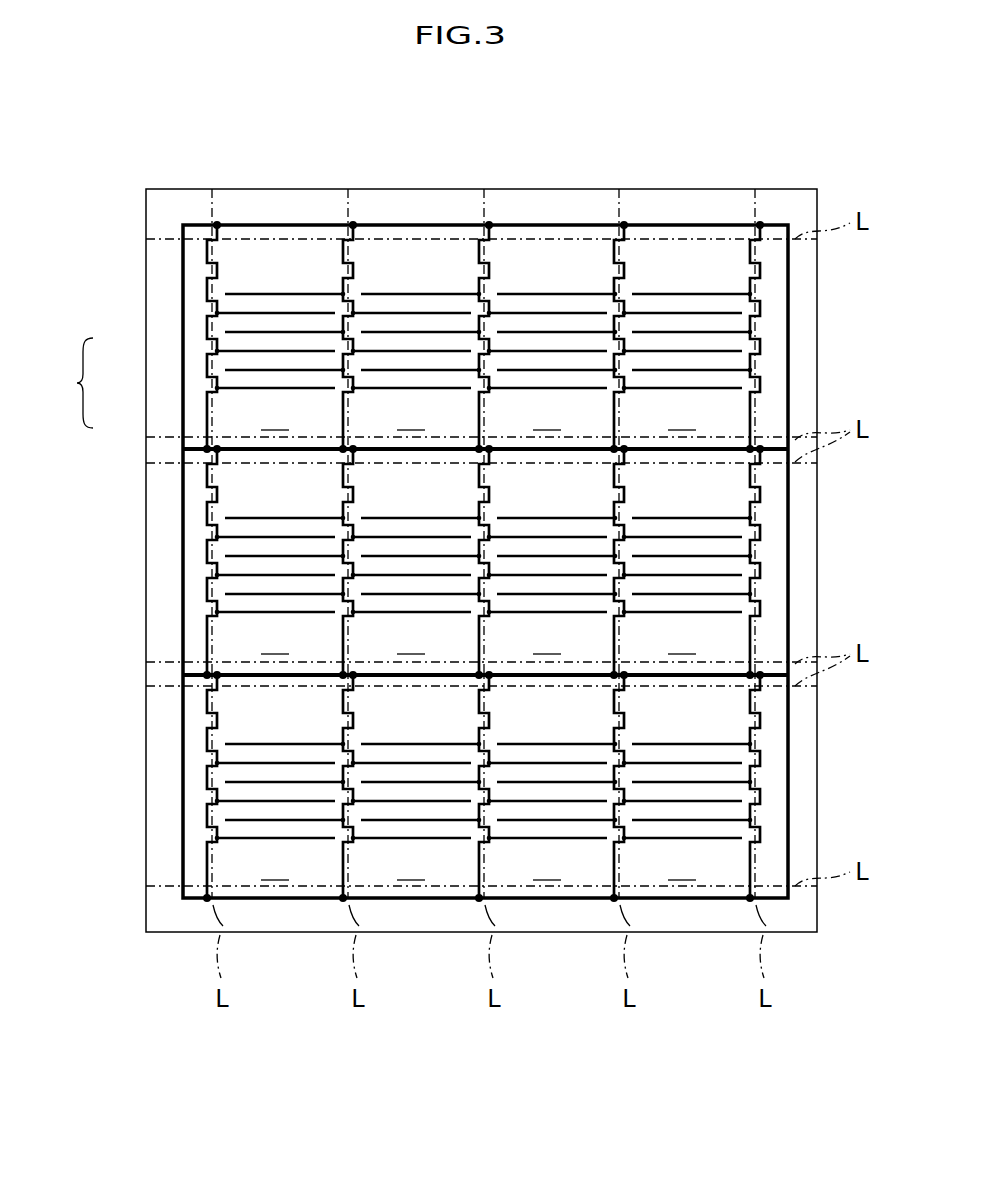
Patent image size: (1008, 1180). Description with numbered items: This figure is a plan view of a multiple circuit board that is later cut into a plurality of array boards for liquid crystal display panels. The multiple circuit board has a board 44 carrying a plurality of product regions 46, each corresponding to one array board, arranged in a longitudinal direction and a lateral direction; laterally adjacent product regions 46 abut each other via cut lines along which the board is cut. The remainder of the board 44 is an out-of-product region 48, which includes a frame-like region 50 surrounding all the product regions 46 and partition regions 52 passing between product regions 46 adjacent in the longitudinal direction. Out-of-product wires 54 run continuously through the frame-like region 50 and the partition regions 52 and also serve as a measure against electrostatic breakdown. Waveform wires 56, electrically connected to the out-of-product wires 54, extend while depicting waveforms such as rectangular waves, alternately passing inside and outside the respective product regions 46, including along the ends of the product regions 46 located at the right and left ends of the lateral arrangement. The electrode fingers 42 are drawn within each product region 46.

The electrode fingers 42 is at (237, 294).
The board 44 is at (817, 371).
The product region 46 is at (479, 643).
The out-of-product region 48 is at (70, 383).
The frame-like region 50 is at (160, 356).
The partition region 52 is at (227, 440).
The out-of-product wire 54 is at (553, 225).
The waveform wire 56 is at (206, 252).